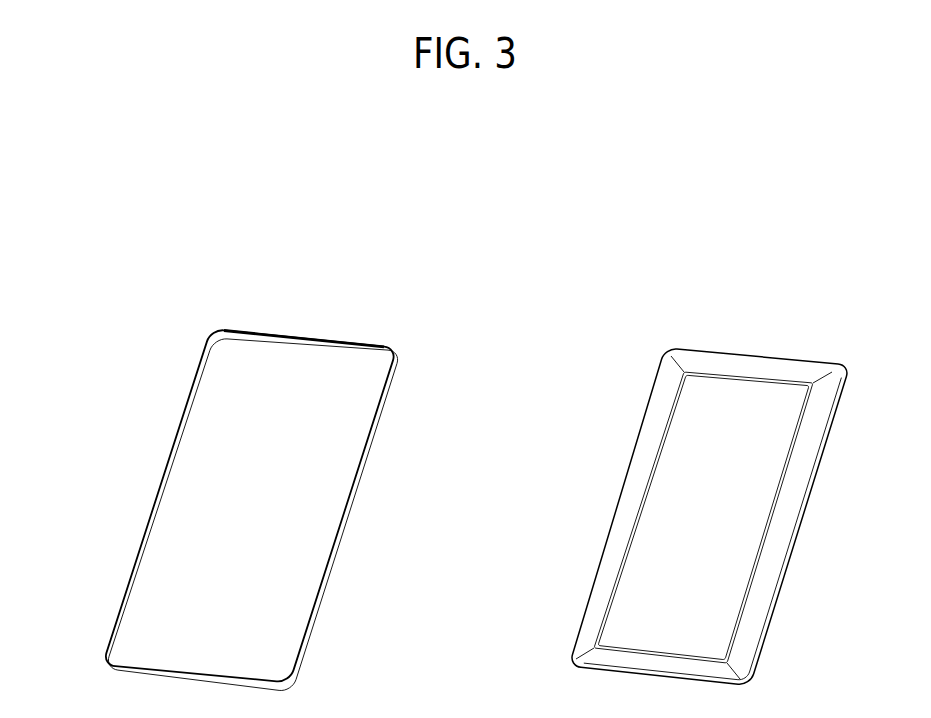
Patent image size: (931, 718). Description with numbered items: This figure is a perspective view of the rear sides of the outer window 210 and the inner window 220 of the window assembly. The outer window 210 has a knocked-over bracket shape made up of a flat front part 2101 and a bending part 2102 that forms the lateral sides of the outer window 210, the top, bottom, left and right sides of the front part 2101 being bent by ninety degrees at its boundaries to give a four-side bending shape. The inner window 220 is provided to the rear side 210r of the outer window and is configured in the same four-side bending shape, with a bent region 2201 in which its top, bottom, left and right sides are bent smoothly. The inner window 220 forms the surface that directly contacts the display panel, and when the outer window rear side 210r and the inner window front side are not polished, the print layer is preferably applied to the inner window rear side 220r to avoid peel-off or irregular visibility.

The outer window 210 is at (226, 472).
The front part 2101 is at (204, 412).
The bending part 2102 is at (257, 332).
The rear side of the outer window 210r is at (207, 534).
The inner window 220 is at (672, 476).
The bent region 2201 is at (657, 419).
The inner window rear side 220r is at (648, 575).